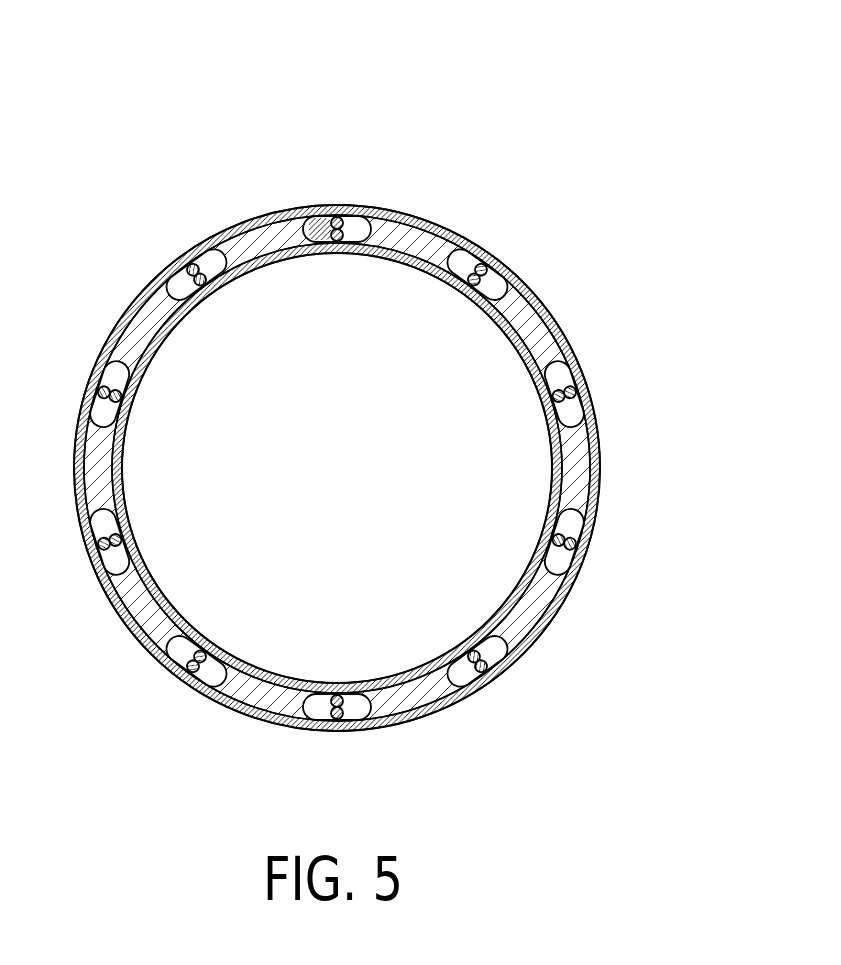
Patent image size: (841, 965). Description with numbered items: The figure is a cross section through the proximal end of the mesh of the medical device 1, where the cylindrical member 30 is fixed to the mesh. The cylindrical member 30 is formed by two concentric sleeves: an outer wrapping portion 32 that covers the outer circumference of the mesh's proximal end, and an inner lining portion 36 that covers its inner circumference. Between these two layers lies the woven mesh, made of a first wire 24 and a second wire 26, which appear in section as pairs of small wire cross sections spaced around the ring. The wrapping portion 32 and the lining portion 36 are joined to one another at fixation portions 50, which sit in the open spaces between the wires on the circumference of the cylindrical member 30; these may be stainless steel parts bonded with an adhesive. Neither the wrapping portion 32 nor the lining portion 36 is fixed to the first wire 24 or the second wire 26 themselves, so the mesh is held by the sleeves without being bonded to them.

The medical device 1 is at (370, 371).
The first wire 24 is at (328, 228).
The second wire 26 is at (327, 235).
The cylindrical member 30 is at (561, 308).
The wrapping portion 32 is at (420, 205).
The lining portion 36 is at (380, 265).
The fixation portions 50 is at (159, 332).